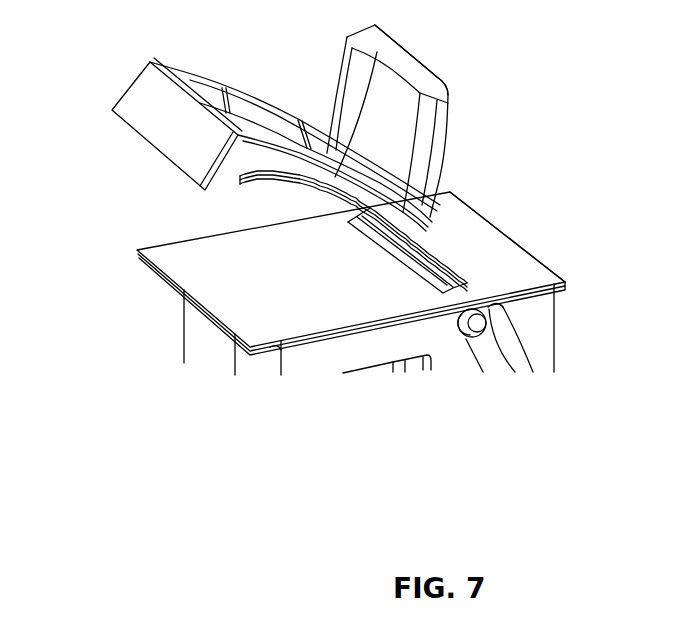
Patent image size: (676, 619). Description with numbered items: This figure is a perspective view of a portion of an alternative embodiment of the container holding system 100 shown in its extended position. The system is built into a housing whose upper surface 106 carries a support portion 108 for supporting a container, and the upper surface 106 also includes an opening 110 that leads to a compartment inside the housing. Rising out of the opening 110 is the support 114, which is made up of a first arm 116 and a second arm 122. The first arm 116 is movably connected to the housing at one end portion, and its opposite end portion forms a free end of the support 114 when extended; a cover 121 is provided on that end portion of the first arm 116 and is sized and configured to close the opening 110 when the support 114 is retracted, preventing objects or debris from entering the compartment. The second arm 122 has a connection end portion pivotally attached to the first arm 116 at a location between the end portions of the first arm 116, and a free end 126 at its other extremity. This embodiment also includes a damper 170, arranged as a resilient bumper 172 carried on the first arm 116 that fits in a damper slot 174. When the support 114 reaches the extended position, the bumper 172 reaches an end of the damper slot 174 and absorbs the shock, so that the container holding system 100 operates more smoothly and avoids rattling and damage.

The container holding system 100 is at (223, 415).
The upper surface 106 is at (137, 253).
The support portion 108 is at (267, 257).
The opening 110 is at (498, 268).
The support 114 is at (190, 72).
The first arm 116 is at (420, 225).
The cover 121 is at (145, 102).
The second arm 122 is at (445, 147).
The free end 126 is at (400, 43).
The damper 170 is at (468, 342).
The resilient bumper 172 is at (483, 323).
The damper slot 174 is at (513, 370).